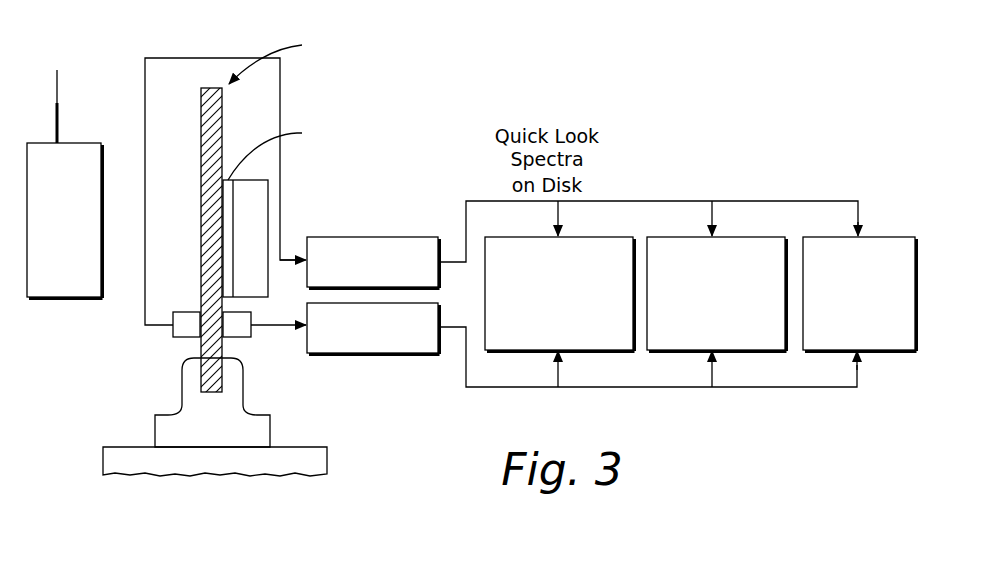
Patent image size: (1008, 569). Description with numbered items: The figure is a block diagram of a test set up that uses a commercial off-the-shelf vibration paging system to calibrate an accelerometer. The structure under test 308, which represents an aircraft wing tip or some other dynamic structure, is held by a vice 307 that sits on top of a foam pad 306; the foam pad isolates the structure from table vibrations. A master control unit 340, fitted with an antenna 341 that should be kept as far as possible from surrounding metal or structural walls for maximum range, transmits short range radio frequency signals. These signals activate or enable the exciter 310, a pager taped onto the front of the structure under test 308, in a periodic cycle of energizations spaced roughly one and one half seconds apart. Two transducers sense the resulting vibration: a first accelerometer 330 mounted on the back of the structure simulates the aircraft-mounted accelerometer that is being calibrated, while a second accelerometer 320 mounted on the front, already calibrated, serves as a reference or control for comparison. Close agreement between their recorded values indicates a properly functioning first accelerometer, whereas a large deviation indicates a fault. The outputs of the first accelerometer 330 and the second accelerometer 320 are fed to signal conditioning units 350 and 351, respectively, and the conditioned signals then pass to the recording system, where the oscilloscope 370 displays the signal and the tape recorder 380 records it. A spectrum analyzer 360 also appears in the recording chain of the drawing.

The foam pad 306 is at (235, 477).
The vice 307 is at (270, 427).
The structure under test 308 is at (200, 145).
The exciter 310 is at (282, 200).
The second accelerometer 320 is at (240, 338).
The first accelerometer 330 is at (190, 338).
The master control unit 340 is at (82, 135).
The antenna 341 is at (58, 82).
The signal conditioning unit 350 is at (338, 237).
The signal conditioning unit 351 is at (408, 355).
The spectrum analyzer 360 is at (598, 237).
The oscilloscope 370 is at (742, 237).
The tape recorder 380 is at (872, 237).